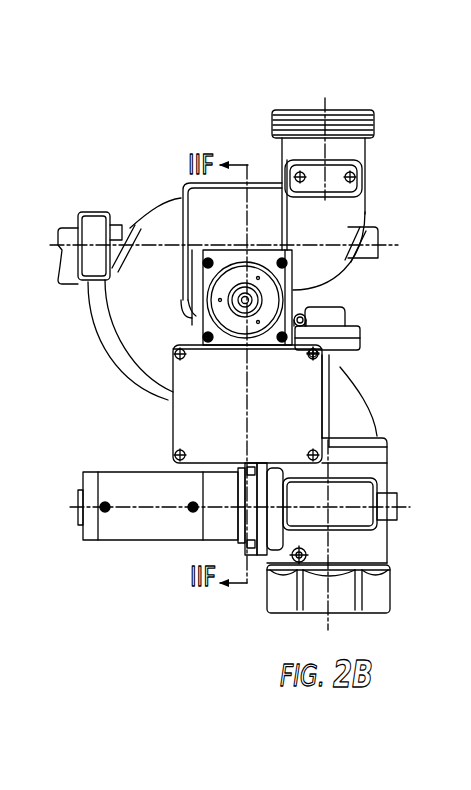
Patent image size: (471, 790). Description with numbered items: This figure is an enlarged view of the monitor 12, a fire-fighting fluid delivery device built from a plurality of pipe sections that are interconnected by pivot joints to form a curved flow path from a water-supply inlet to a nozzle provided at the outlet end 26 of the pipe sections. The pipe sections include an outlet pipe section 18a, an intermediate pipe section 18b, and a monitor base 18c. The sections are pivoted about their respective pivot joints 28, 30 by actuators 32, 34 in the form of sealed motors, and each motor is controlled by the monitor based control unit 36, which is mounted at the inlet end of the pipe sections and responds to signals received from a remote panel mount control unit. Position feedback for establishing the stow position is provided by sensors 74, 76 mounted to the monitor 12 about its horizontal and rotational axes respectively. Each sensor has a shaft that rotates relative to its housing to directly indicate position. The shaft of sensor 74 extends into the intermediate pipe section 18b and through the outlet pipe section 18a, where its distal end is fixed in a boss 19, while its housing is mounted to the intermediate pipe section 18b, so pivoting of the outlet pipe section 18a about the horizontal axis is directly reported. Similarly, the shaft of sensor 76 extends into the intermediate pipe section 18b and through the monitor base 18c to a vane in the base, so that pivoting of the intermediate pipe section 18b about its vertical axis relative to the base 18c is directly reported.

The monitor 12 is at (396, 110).
The outlet end 26 is at (285, 110).
The pivot joint 30 is at (264, 183).
The outlet pipe section 18a is at (355, 210).
The boss 19 is at (368, 262).
The actuator 34 is at (292, 300).
The sensor 76 is at (364, 335).
The monitor based control unit 36 is at (306, 397).
The intermediate pipe section 18b is at (176, 203).
The pivot joint 28 is at (385, 546).
The monitor base 18c is at (378, 593).
The actuator 32 is at (149, 541).
The sensor 74 is at (92, 208).